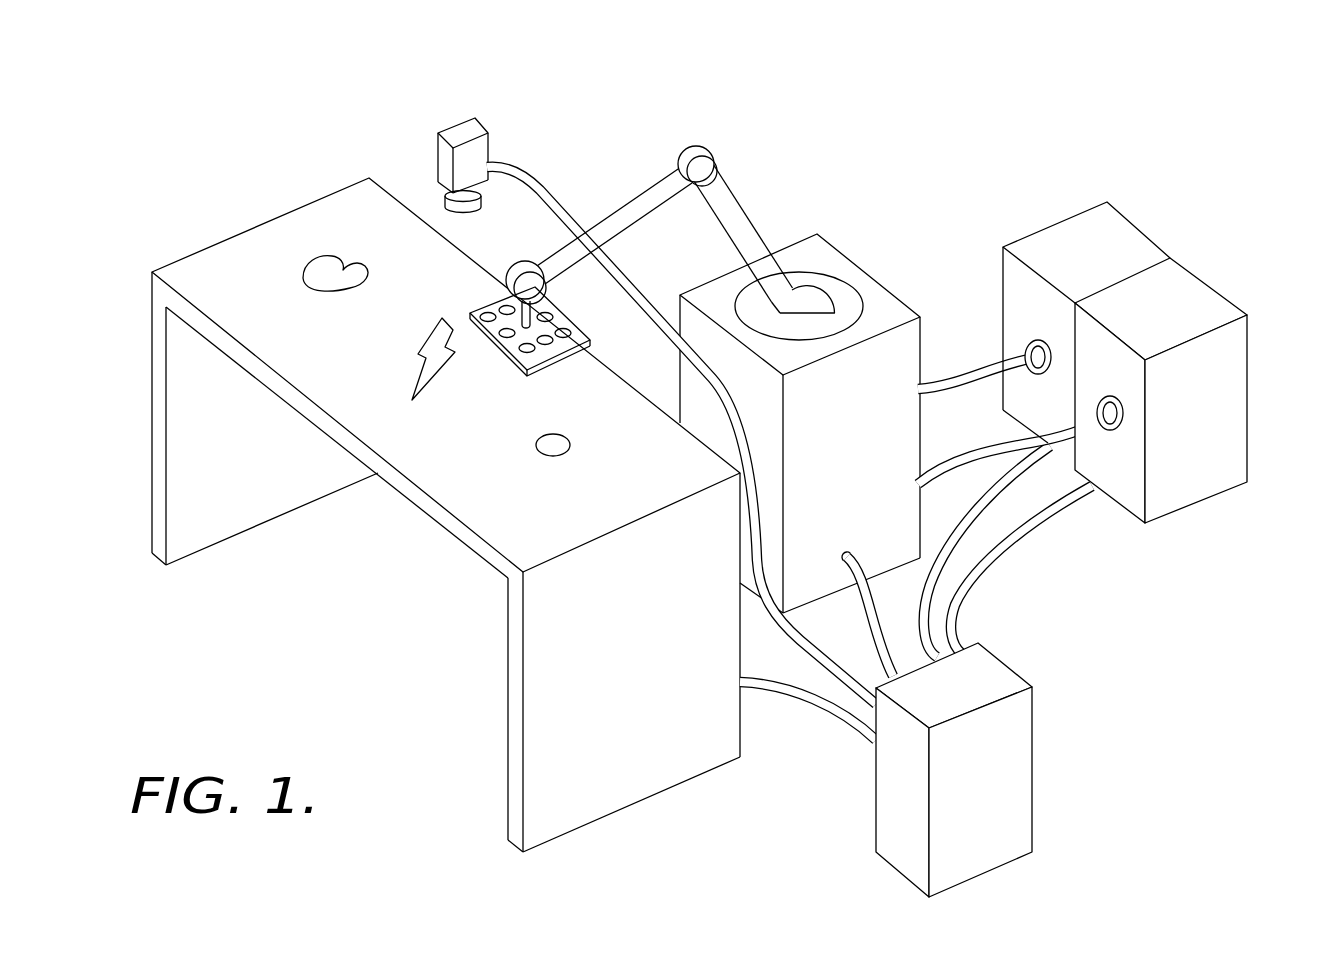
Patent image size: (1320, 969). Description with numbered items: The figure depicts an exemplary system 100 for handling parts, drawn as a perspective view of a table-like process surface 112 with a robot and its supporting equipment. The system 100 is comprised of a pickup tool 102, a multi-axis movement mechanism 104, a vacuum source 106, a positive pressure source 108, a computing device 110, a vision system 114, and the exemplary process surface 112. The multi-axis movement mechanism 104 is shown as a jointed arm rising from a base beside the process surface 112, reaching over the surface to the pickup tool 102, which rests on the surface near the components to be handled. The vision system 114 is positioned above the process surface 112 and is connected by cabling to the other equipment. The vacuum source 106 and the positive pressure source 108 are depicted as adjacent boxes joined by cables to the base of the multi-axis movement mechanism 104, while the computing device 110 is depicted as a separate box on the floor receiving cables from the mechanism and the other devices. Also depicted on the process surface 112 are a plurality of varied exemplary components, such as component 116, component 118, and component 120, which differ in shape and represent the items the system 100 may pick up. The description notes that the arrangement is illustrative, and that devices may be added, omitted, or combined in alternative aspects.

The system 100 is at (170, 110).
The pickup tool 102 is at (561, 318).
The multi-axis movement mechanism 104 is at (708, 143).
The vacuum source 106 is at (1128, 225).
The positive pressure source 108 is at (1207, 290).
The computing device 110 is at (1014, 760).
The process surface 112 is at (228, 272).
The vision system 114 is at (462, 123).
The component 116 is at (337, 248).
The component 118 is at (432, 333).
The component 120 is at (537, 438).